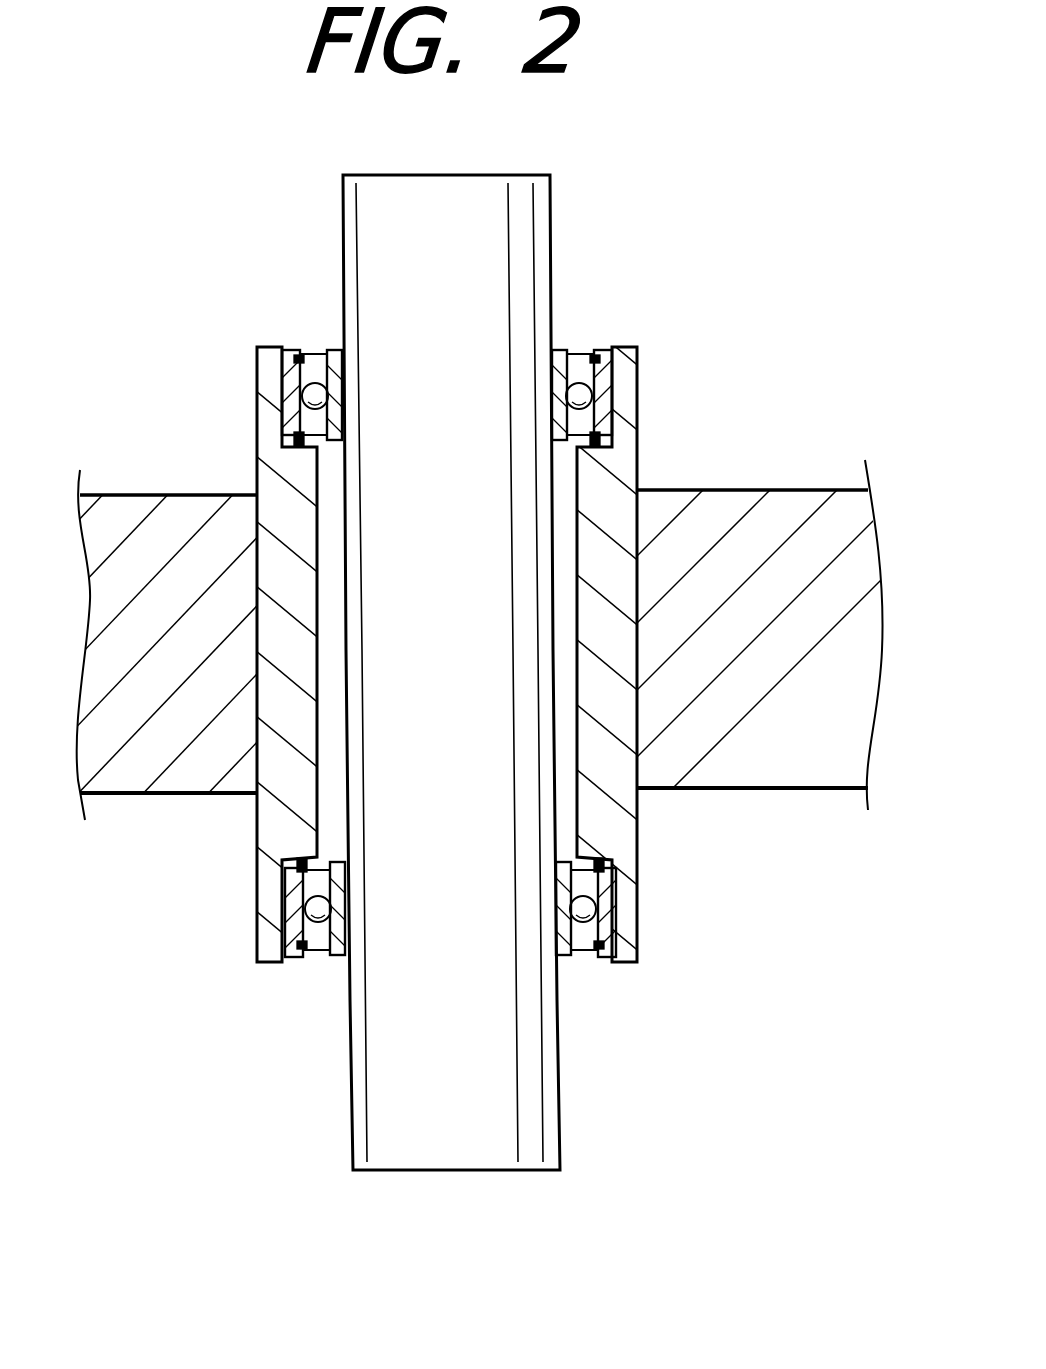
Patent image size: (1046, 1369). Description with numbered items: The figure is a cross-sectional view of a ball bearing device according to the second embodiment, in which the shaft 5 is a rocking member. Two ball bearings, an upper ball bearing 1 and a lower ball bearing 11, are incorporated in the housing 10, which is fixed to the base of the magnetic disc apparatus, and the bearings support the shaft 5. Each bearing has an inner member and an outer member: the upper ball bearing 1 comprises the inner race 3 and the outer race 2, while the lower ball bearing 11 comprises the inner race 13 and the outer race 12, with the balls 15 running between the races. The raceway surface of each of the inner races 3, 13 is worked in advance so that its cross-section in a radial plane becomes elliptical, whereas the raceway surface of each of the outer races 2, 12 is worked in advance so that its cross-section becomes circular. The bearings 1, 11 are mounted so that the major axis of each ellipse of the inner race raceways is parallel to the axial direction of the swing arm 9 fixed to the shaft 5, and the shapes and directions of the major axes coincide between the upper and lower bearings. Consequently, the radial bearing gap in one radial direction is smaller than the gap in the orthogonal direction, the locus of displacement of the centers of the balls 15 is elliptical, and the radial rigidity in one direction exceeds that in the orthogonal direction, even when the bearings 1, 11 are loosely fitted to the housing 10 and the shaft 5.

The ball bearing 1 is at (312, 322).
The outer race 2 is at (605, 407).
The inner race 3 is at (566, 352).
The shaft 5 is at (455, 185).
The swing arm 9 is at (135, 768).
The housing 10 is at (452, 342).
The ball bearing 11 is at (451, 968).
The outer race 12 is at (614, 922).
The inner race 13 is at (575, 940).
The balls 15 is at (580, 390).